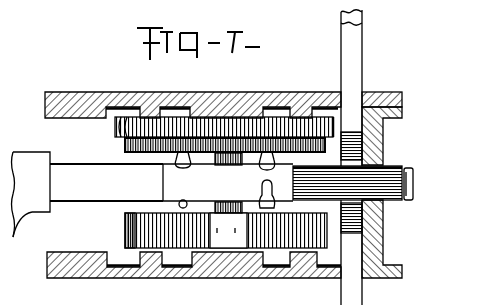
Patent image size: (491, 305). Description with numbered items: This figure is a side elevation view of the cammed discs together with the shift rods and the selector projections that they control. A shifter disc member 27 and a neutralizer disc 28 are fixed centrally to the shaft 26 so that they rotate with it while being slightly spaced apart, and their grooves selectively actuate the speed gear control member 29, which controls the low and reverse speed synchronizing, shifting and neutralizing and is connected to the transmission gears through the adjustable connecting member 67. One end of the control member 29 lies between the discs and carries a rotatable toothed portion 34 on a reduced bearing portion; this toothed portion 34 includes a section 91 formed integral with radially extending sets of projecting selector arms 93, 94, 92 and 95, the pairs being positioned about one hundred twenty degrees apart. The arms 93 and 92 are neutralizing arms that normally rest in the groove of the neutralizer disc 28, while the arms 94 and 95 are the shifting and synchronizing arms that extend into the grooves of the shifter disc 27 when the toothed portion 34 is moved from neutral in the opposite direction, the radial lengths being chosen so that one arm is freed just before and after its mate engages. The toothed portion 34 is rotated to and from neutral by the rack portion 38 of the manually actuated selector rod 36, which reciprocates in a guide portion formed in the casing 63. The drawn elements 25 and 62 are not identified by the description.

The upper coil 25 is at (133, 127).
The shaft 26 is at (238, 202).
The shifter disc member 27 is at (137, 229).
The neutralizer disc 28 is at (133, 147).
The speed gear control member 29 is at (90, 192).
The toothed portion 34 is at (381, 197).
The selector rod 36 is at (352, 71).
The rack portion 38 is at (350, 136).
The upper housing 62 is at (228, 97).
The casing 63 is at (260, 273).
The connecting member 67 is at (30, 163).
The section of toothed member 91 is at (200, 183).
The selector arm 92 is at (180, 170).
The selector arm 93 is at (262, 165).
The selector arm 94 is at (262, 188).
The selector arm 95 is at (187, 199).